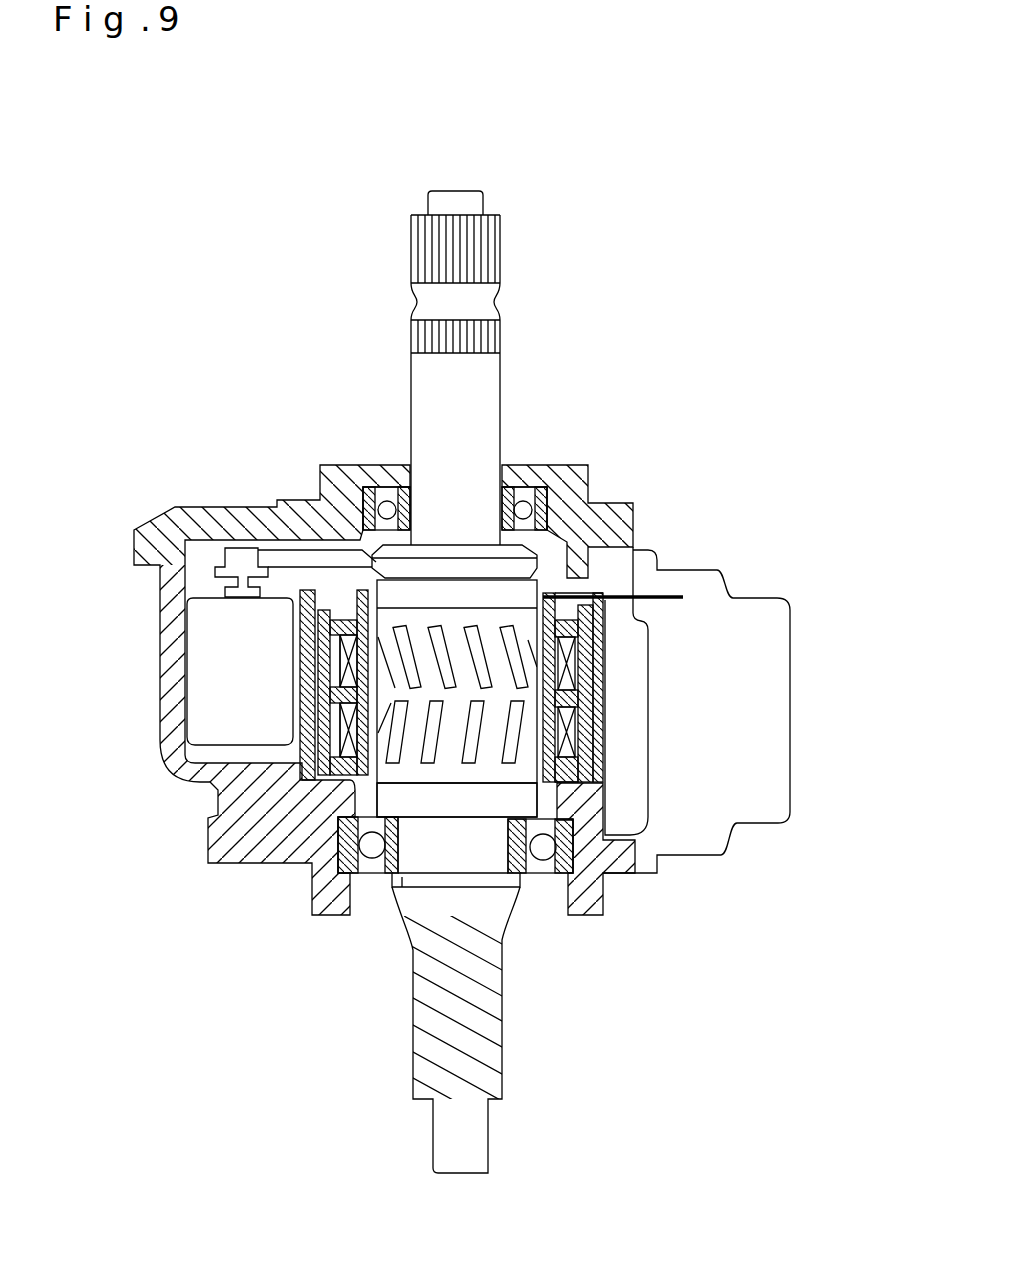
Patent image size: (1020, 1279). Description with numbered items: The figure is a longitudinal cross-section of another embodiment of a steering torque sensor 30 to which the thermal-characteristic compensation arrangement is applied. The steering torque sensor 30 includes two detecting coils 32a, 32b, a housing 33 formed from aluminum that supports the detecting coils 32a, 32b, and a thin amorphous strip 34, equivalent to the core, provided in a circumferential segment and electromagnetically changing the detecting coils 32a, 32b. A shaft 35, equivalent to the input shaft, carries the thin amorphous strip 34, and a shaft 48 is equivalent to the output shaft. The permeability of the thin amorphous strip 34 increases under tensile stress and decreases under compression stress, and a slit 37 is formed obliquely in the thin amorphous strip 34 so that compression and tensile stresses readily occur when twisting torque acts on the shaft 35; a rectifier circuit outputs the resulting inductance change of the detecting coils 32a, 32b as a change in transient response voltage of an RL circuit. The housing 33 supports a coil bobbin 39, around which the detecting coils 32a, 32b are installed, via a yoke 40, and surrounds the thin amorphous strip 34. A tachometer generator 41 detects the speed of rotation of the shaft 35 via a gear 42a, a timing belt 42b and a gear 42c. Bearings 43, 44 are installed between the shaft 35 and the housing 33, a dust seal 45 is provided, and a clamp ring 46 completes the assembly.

The steering torque sensor 30 is at (653, 392).
The detecting coil 32a is at (603, 667).
The detecting coil 32b is at (603, 737).
The housing 33 is at (232, 841).
The thin amorphous strip 34 is at (407, 773).
The shaft 35 is at (480, 383).
The slit 37 is at (440, 755).
The coil bobbin 39 is at (603, 703).
The yoke 40 is at (603, 640).
The tachometer generator 41 is at (202, 669).
The gear 42a is at (387, 550).
The timing belt 42b is at (298, 557).
The gear 42c is at (240, 557).
The bearing 43 is at (548, 497).
The bearing 44 is at (544, 878).
The dust seal 45 is at (517, 466).
The clamp ring 46 is at (397, 880).
The shaft 48 is at (478, 1067).